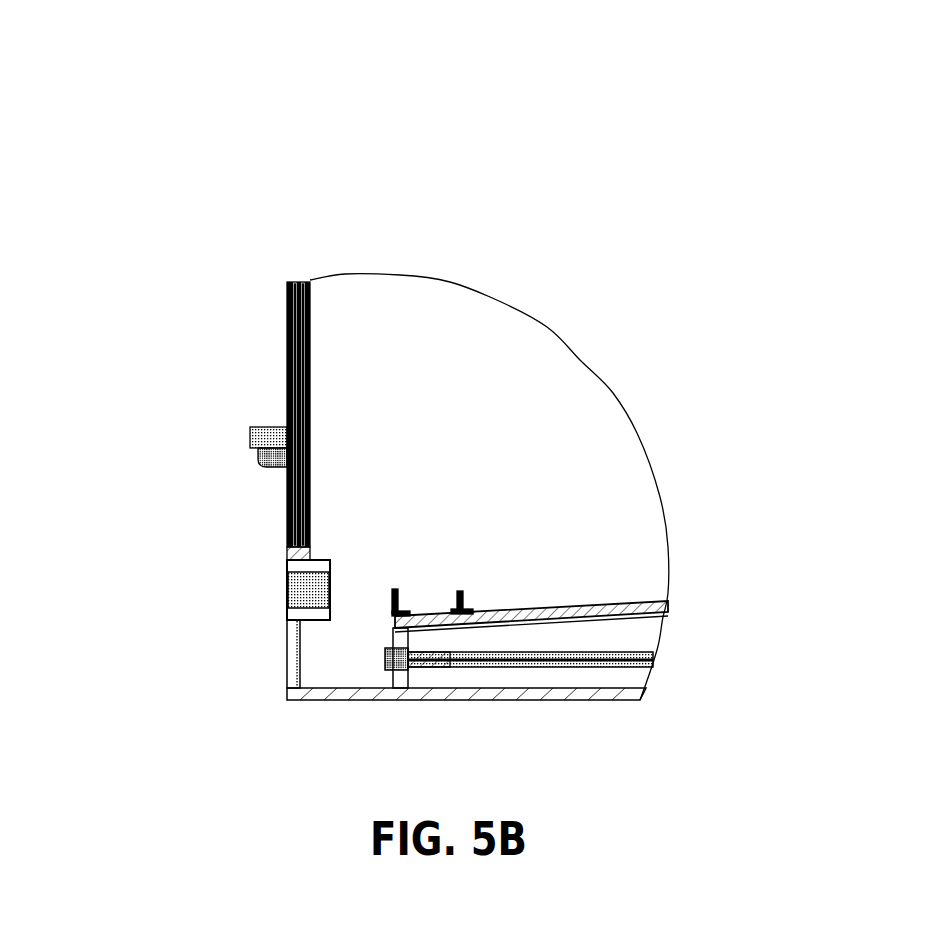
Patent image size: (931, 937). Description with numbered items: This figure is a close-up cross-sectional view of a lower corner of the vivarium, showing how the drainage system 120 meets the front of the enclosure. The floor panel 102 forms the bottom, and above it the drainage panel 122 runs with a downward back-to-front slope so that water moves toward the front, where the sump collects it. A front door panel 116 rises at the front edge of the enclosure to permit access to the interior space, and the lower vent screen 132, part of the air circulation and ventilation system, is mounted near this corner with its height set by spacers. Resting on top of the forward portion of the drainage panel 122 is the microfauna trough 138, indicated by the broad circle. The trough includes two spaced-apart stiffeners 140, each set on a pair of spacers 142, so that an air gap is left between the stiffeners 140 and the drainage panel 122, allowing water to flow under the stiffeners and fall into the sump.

The floor panel 102 is at (547, 698).
The front door panel 116 is at (287, 668).
The drainage system 120 is at (290, 247).
The drainage panel 122 is at (630, 602).
The lower vent screen 132 is at (293, 615).
The microfauna trough 138 is at (432, 323).
The stiffener 140 is at (400, 587).
The spacer 142 is at (418, 607).